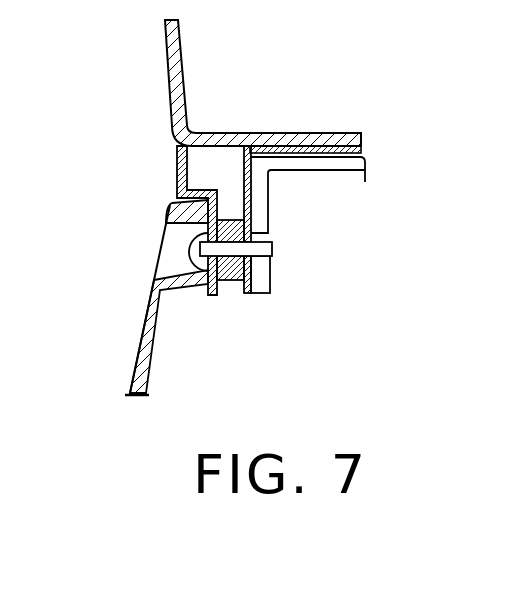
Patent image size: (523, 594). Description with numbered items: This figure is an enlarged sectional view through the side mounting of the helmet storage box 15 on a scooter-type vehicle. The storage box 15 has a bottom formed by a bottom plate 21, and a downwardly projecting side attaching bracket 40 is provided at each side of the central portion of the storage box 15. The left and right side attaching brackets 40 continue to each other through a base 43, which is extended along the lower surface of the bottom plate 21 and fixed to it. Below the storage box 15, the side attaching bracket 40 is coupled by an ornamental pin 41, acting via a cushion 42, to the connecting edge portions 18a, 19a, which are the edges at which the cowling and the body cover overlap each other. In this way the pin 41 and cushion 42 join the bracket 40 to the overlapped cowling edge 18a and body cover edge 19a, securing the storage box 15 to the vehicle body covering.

The storage box 15 is at (177, 82).
The bottom plate 21 is at (292, 133).
The base 43 is at (349, 147).
The side attaching bracket 40 is at (258, 192).
The connecting edge portion 19a is at (177, 168).
The ornamental pin 41 is at (190, 253).
The cushion 42 is at (230, 282).
The connecting edge portion 18a is at (142, 333).